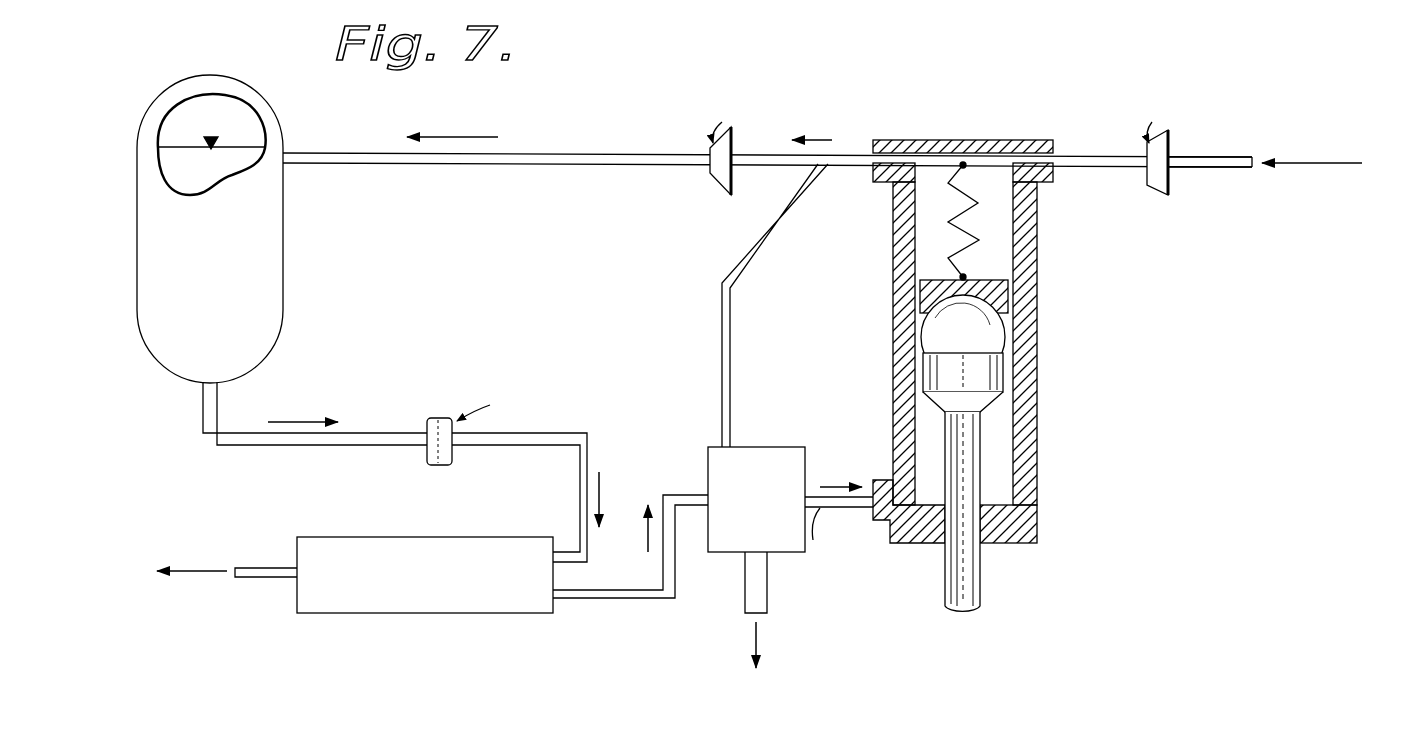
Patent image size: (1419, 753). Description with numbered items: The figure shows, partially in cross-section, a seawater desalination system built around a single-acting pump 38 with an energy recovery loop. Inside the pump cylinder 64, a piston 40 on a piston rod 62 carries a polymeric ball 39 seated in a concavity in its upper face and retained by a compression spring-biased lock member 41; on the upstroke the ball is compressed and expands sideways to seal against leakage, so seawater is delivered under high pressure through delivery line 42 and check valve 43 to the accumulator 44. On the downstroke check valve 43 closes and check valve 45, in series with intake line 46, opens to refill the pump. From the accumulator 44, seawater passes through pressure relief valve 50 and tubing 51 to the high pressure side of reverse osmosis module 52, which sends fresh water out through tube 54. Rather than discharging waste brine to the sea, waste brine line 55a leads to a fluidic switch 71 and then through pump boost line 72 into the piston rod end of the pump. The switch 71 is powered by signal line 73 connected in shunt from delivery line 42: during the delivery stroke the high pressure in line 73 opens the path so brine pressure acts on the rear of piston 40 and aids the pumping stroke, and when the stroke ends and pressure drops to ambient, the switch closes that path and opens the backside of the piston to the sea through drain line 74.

The single-acting pump 38 is at (1042, 261).
The polymeric ball 39 is at (980, 337).
The piston 40 is at (975, 380).
The lock member 41 is at (985, 290).
The delivery line 42 is at (768, 160).
The check valve 43 is at (717, 172).
The accumulator 44 is at (258, 210).
The check valve 45 is at (1158, 172).
The intake line 46 is at (1205, 163).
The pressure relief valve 50 is at (438, 455).
The tubing 51 is at (586, 448).
The reverse osmosis module 52 is at (460, 598).
The tube 54 is at (271, 578).
The waste brine line 55a is at (602, 591).
The piston rod 62 is at (962, 480).
The pump cylinder 64 is at (1025, 446).
The fluidic switch 71 is at (790, 462).
The pump boost line 72 is at (867, 503).
The signal line 73 is at (770, 237).
The drain line 74 is at (757, 602).